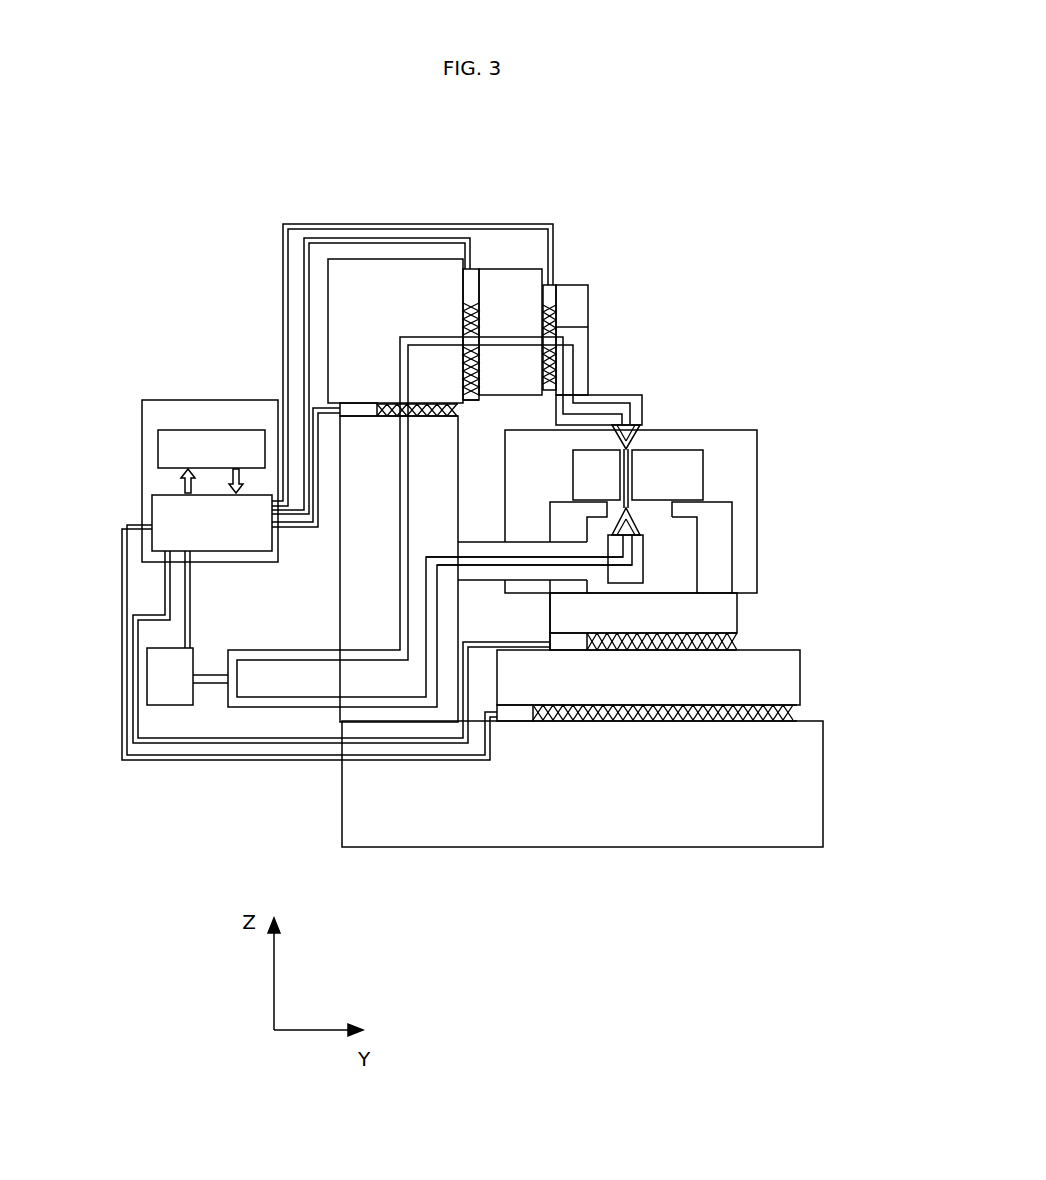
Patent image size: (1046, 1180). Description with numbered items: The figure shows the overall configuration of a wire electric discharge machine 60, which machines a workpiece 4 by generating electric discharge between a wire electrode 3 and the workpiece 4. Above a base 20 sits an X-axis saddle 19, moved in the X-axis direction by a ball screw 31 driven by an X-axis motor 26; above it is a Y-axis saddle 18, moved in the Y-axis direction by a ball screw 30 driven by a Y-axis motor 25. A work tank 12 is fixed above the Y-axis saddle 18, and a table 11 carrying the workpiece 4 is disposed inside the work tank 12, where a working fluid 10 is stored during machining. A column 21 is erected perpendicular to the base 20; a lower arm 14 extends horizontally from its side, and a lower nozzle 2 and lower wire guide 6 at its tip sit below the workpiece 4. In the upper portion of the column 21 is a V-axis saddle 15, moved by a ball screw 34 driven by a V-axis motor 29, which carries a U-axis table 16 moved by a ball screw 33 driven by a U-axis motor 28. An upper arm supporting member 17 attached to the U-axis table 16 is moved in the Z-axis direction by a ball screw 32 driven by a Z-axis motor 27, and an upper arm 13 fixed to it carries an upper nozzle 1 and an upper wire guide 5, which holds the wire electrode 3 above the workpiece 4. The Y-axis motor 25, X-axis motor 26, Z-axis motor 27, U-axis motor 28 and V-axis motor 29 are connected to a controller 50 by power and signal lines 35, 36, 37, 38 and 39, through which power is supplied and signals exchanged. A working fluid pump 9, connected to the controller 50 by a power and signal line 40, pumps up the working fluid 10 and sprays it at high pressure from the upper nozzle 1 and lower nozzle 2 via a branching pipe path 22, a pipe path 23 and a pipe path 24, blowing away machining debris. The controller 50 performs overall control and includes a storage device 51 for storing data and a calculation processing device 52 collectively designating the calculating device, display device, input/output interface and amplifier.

The upper nozzle 1 is at (641, 440).
The lower nozzle 2 is at (638, 523).
The wire electrode 3 is at (628, 490).
The workpiece 4 is at (705, 463).
The upper wire guide 5 is at (612, 432).
The lower wire guide 6 is at (613, 532).
The working fluid pump 9 is at (163, 708).
The working fluid 10 is at (745, 550).
The table 11 is at (722, 497).
The work tank 12 is at (725, 430).
The upper arm 13 is at (610, 394).
The lower arm 14 is at (490, 540).
The V-axis saddle 15 is at (418, 258).
The U-axis table 16 is at (512, 282).
The upper arm supporting member 17 is at (590, 298).
The Y-axis saddle 18 is at (727, 612).
The X-axis saddle 19 is at (802, 683).
The base 20 is at (582, 825).
The column 21 is at (340, 608).
The pipe path 22 is at (210, 684).
The pipe path 23 is at (403, 338).
The pipe path 24 is at (532, 562).
The Y-axis motor 25 is at (558, 642).
The X-axis motor 26 is at (508, 712).
The Z-axis motor 27 is at (560, 281).
The U-axis motor 28 is at (470, 282).
The V-axis motor 29 is at (353, 406).
The ball screw 30 is at (733, 641).
The ball screw 31 is at (800, 715).
The ball screw 32 is at (588, 327).
The ball screw 33 is at (472, 402).
The ball screw 34 is at (458, 413).
The power and signal line 35 is at (268, 746).
The power and signal line 36 is at (318, 760).
The power and signal line 37 is at (378, 223).
The power and signal line 38 is at (340, 237).
The power and signal line 39 is at (318, 407).
The power and signal line 40 is at (190, 585).
The controller 50 is at (185, 400).
The storage device 51 is at (157, 451).
The calculation processing device 52 is at (152, 508).
The wire electric discharge machine 60 is at (200, 237).